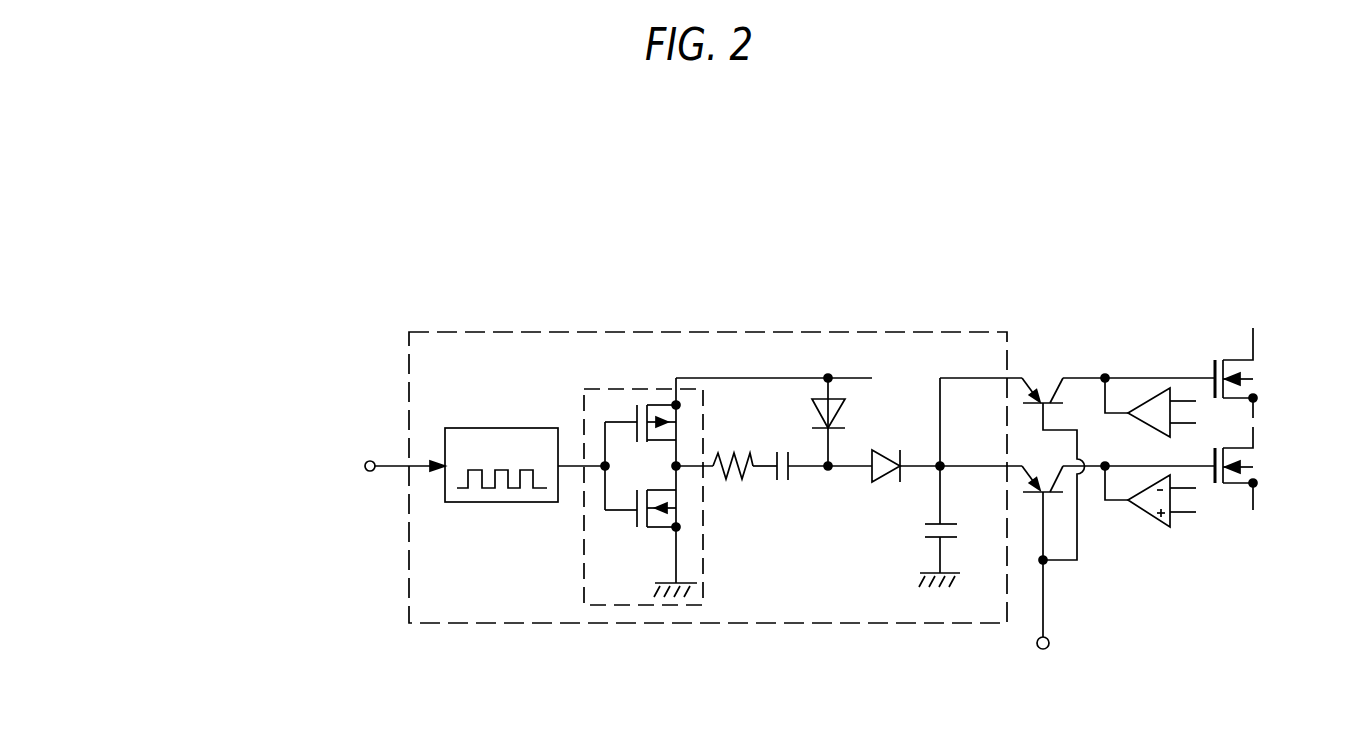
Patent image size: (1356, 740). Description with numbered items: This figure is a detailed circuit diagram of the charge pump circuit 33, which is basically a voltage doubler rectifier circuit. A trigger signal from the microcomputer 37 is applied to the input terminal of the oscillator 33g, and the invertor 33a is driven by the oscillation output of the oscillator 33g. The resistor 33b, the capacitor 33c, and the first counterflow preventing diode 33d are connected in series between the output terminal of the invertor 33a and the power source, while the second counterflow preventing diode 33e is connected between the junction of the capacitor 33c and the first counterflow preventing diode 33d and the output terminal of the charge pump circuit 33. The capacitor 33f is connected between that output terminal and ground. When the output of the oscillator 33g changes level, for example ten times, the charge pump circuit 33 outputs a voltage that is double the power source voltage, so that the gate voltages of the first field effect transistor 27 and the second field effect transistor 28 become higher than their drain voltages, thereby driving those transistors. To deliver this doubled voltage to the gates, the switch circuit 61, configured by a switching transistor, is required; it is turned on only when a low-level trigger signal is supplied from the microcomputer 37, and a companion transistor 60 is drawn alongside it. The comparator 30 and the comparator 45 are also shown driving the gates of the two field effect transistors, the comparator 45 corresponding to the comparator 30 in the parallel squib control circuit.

The first field effect transistor 27 is at (1262, 467).
The second field effect transistor 28 is at (1222, 360).
The comparator 30 is at (1151, 516).
The charge pump circuit 33 is at (952, 340).
The invertor 33a is at (703, 553).
The resistor 33b is at (740, 452).
The capacitor 33c is at (786, 481).
The first counterflow preventing diode 33d is at (845, 405).
The second counterflow preventing diode 33e is at (889, 483).
The capacitor 33f is at (957, 527).
The oscillator 33g is at (505, 503).
The microcomputer 37 is at (617, 572).
The comparator 45 is at (1157, 437).
The transistor 60 is at (1045, 378).
The switch circuit 61 is at (1050, 495).